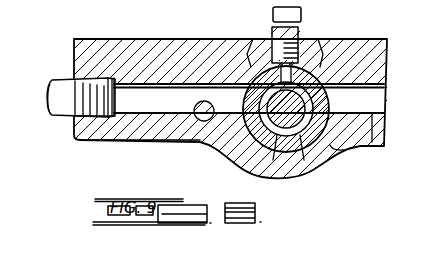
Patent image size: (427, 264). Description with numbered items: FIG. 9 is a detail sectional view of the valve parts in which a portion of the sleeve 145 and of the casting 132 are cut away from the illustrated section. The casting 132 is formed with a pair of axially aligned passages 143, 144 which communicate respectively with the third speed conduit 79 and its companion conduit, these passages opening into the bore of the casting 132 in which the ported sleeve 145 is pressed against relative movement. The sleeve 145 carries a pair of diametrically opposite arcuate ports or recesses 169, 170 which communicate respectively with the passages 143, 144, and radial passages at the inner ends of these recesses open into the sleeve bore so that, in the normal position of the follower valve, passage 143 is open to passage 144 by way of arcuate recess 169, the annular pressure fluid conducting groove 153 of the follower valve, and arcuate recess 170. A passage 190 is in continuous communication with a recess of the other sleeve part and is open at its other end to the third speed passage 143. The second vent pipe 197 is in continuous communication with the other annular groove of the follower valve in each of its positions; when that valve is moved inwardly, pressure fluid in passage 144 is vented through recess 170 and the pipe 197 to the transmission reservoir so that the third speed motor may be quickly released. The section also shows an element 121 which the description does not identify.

The casting 132 is at (366, 40).
The third speed conduit 79 is at (60, 118).
The passage 190 is at (205, 121).
The second vent pipe 197 is at (301, 12).
The arcuate recess 169 is at (247, 150).
The annular pressure fluid conducting groove 153 is at (281, 140).
The pin 121 is at (302, 138).
The sleeve 145 is at (287, 160).
The arcuate recess 170 is at (324, 148).
The passage 143 is at (98, 140).
The passage 144 is at (372, 142).